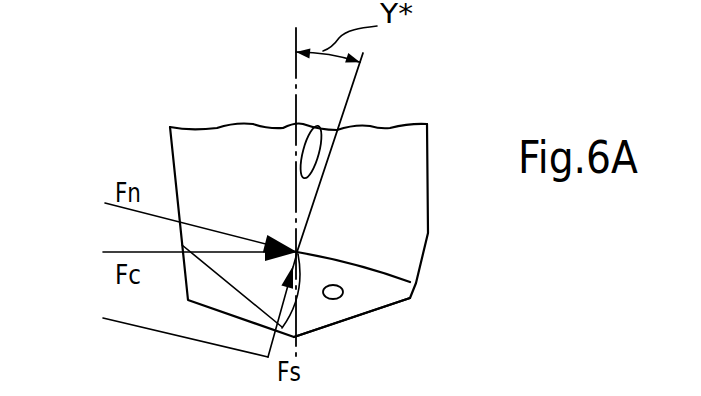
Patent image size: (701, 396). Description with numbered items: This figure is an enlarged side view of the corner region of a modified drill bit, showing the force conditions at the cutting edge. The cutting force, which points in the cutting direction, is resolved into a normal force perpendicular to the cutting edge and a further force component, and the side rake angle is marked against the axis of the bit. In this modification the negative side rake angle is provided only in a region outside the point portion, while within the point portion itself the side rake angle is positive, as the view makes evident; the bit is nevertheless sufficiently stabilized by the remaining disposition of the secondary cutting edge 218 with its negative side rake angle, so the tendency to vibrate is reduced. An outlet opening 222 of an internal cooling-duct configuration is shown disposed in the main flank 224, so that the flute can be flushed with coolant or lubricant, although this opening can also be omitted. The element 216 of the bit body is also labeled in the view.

The cutting insert body 216 is at (250, 200).
The secondary cutting edge 218 is at (320, 124).
The outlet opening 222 is at (343, 293).
The main flank 224 is at (345, 310).